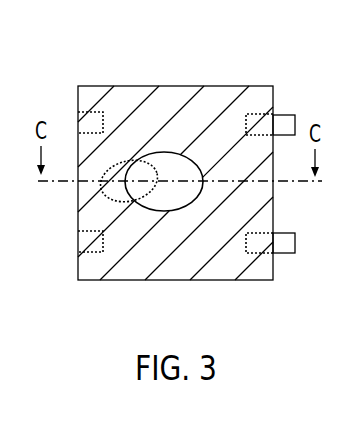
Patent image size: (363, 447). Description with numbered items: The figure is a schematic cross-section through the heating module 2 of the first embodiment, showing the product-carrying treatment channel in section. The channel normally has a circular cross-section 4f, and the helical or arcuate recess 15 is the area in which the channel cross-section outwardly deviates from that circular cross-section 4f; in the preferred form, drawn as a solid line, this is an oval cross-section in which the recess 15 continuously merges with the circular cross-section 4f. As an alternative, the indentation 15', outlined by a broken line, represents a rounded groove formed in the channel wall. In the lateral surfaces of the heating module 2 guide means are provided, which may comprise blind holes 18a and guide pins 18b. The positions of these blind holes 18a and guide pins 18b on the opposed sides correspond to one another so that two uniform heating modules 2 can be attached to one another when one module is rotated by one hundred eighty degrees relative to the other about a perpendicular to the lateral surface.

The heating module 2 is at (128, 101).
The circular cross-section 4f is at (149, 201).
The helical or arcuate recess 15 is at (165, 107).
The indentation 15' is at (95, 191).
The blind holes 18a is at (93, 114).
The guide pins 18b is at (283, 120).